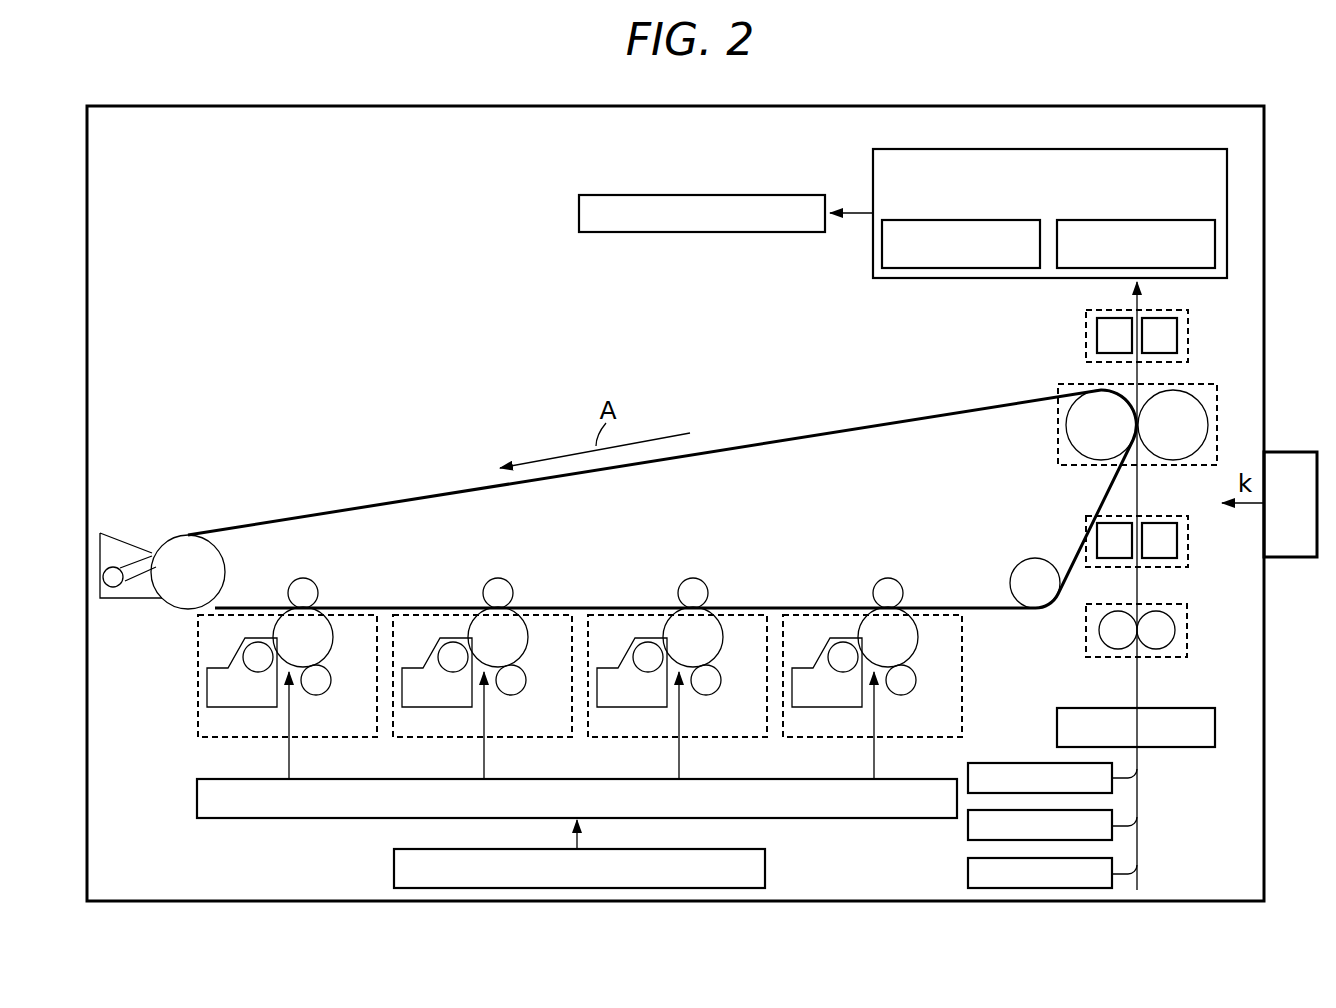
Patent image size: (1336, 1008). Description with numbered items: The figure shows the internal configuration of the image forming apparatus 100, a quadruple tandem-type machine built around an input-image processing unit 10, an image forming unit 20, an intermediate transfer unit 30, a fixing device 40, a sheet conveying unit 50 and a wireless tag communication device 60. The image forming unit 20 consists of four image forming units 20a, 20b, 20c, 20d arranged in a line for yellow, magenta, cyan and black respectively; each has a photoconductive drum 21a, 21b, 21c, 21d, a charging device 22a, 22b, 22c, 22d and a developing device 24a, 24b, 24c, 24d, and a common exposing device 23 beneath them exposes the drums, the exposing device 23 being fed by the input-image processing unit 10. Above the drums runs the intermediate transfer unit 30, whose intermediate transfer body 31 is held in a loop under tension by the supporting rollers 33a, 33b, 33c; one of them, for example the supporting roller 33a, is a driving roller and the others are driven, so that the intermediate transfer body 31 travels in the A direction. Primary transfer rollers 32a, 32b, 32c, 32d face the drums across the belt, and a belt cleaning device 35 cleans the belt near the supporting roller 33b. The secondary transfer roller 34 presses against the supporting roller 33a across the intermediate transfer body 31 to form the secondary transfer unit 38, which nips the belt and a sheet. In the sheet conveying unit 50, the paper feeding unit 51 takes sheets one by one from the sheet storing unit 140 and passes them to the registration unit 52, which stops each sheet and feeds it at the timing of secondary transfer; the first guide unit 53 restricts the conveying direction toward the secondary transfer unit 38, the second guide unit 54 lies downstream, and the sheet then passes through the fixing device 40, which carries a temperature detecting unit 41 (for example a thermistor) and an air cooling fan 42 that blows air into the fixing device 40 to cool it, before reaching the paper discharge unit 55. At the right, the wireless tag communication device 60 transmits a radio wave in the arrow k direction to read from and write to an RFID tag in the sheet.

The image forming apparatus 100 is at (1168, 106).
The input-image processing unit 10 is at (715, 849).
The image forming unit 20 is at (529, 658).
The image forming unit 20a is at (290, 693).
The image forming unit 20b is at (485, 693).
The image forming unit 20c is at (679, 693).
The image forming unit 20d is at (875, 693).
The photoconductive drum 21a is at (332, 630).
The photoconductive drum 21b is at (527, 630).
The photoconductive drum 21c is at (722, 630).
The photoconductive drum 21d is at (917, 630).
The charging device 22a is at (320, 695).
The charging device 22b is at (515, 695).
The charging device 22c is at (710, 695).
The charging device 22d is at (905, 695).
The exposing device 23 is at (215, 779).
The developing device 24a is at (212, 707).
The developing device 24b is at (407, 707).
The developing device 24c is at (602, 707).
The developing device 24d is at (797, 707).
The intermediate transfer unit 30 is at (679, 529).
The intermediate transfer body 31 is at (332, 509).
The primary transfer roller 32a is at (303, 578).
The primary transfer roller 32b is at (498, 578).
The primary transfer roller 32c is at (693, 578).
The primary transfer roller 32d is at (888, 578).
The supporting roller 33a is at (1066, 452).
The supporting roller 33b is at (183, 535).
The supporting roller 33c is at (1036, 558).
The secondary transfer roller 34 is at (1207, 416).
The belt cleaning device 35 is at (130, 541).
The secondary transfer unit 38 is at (1168, 384).
The fixing device 40 is at (1152, 149).
The temperature detecting unit 41 is at (978, 220).
The air cooling fan 42 is at (1152, 220).
The sheet conveying unit 50 is at (1143, 586).
The paper feeding unit 51 is at (1168, 708).
The registration unit 52 is at (1148, 605).
The first guide unit 53 is at (1150, 516).
The second guide unit 54 is at (1150, 310).
The paper discharge unit 55 is at (760, 195).
The wireless tag communication device 60 is at (1290, 452).
The sheet storing unit 140 is at (957, 836).